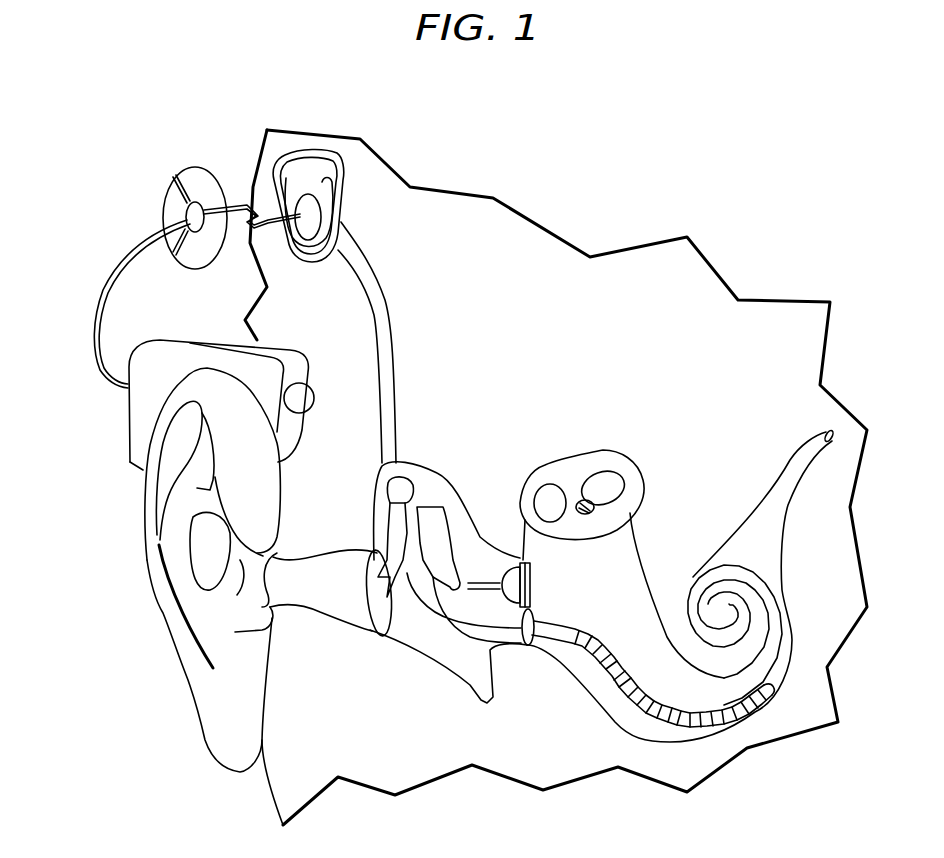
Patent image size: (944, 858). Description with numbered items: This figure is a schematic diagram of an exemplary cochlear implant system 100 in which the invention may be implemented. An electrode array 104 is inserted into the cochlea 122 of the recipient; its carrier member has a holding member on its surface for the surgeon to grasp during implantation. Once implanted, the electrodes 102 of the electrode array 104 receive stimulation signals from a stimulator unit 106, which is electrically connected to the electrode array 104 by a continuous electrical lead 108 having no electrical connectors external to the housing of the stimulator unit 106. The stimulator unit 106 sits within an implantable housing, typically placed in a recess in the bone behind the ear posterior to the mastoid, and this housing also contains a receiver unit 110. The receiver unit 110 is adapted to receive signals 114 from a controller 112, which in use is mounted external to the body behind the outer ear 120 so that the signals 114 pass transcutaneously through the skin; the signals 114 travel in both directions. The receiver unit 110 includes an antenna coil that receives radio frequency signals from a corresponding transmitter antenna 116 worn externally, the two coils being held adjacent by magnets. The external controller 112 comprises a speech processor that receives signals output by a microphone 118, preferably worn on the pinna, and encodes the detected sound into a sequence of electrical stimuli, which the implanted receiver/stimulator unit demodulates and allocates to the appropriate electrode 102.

The cochlear implant system 100 is at (98, 147).
The electrodes 102 is at (767, 700).
The electrode array 104 is at (633, 698).
The stimulator unit 106 is at (335, 205).
The electrical lead 108 is at (396, 360).
The receiver unit 110 is at (322, 218).
The controller 112 is at (137, 425).
The signals 114 is at (246, 228).
The transmitter antenna 116 is at (187, 213).
The microphone 118 is at (300, 402).
The outer ear 120 is at (210, 711).
The cochlea 122 is at (637, 535).